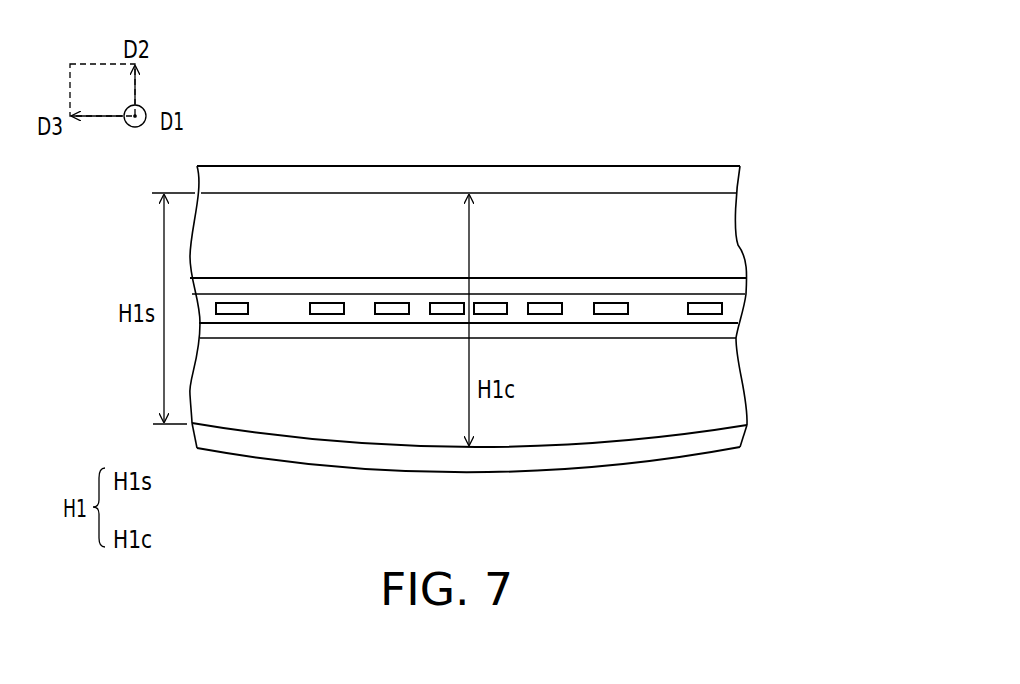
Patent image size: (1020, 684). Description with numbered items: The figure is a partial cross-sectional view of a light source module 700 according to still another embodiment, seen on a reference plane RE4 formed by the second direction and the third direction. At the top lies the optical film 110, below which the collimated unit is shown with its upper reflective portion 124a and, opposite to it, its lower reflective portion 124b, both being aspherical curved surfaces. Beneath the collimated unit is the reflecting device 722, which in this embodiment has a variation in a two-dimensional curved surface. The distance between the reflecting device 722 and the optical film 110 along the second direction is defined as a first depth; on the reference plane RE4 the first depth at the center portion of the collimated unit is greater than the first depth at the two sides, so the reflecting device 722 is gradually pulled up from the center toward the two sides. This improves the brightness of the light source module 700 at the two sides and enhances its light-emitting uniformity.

The optical film 110 is at (392, 180).
The upper reflective portion 124a is at (714, 233).
The lower reflective portion 124b is at (707, 386).
The reflecting device 722 is at (392, 464).
The light source module 700 is at (511, 322).
The reference plane RE4 is at (93, 80).